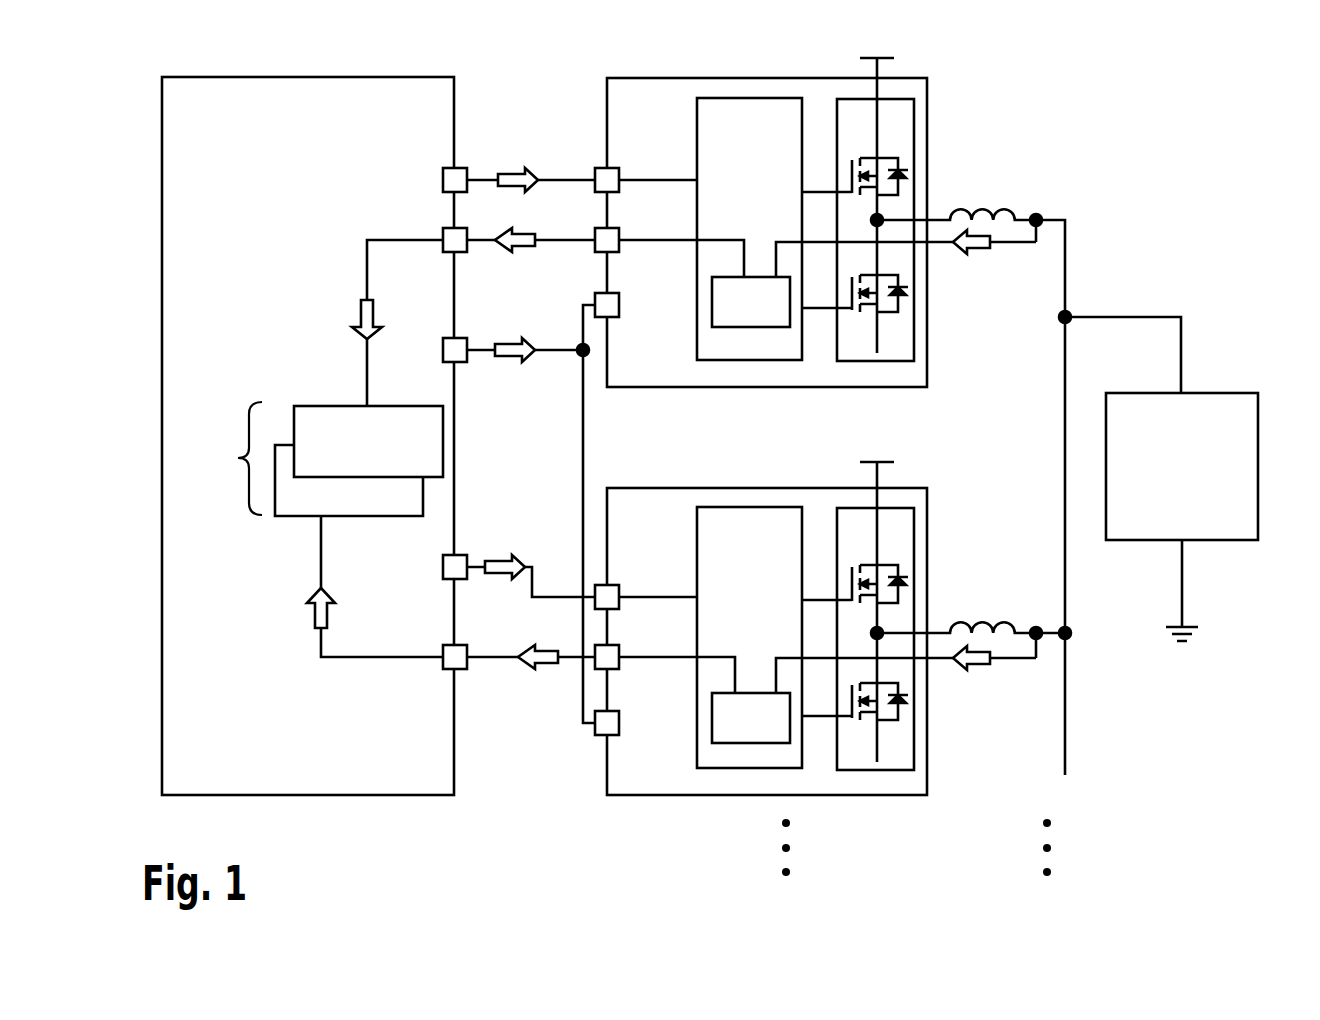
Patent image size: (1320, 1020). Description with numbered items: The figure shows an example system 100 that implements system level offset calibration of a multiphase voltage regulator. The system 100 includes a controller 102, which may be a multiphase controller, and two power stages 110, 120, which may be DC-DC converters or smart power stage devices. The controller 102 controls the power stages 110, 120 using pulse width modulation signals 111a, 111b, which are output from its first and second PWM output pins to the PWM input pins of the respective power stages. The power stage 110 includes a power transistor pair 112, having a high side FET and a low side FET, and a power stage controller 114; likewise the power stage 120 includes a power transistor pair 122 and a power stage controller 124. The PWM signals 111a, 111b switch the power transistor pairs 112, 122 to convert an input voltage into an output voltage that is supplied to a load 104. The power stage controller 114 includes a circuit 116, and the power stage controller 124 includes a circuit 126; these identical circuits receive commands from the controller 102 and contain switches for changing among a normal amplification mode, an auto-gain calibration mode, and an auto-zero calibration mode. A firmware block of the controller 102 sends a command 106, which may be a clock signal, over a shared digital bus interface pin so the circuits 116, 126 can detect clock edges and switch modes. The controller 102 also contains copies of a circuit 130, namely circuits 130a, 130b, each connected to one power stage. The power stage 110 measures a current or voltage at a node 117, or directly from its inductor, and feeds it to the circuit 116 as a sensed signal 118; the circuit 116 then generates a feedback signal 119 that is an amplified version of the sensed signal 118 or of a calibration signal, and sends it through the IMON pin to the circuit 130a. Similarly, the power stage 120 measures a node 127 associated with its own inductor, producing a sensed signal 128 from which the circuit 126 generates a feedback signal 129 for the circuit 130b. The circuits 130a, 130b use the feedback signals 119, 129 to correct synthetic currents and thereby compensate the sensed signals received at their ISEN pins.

The system 100 is at (1108, 933).
The controller 102 is at (288, 118).
The load 104 is at (1162, 480).
The command 106 is at (512, 364).
The power stage 110 is at (607, 112).
The pulse width modulation signal 111a is at (522, 166).
The pulse width modulation signal 111b is at (510, 555).
The power transistor pair 112 is at (895, 99).
The power stage controller 114 is at (729, 133).
The circuit 116 is at (731, 315).
The node 117 is at (1036, 214).
The sensed signal 118 is at (985, 255).
The feedback signal 119 is at (527, 250).
The power stage 120 is at (607, 775).
The power transistor pair 122 is at (895, 508).
The power stage controller 124 is at (729, 542).
The circuit 126 is at (731, 731).
The node 127 is at (1036, 627).
The sensed signal 128 is at (985, 671).
The feedback signal 129 is at (327, 612).
The circuit 130 is at (223, 458).
The circuit 130a is at (396, 455).
The circuit 130b is at (339, 512).